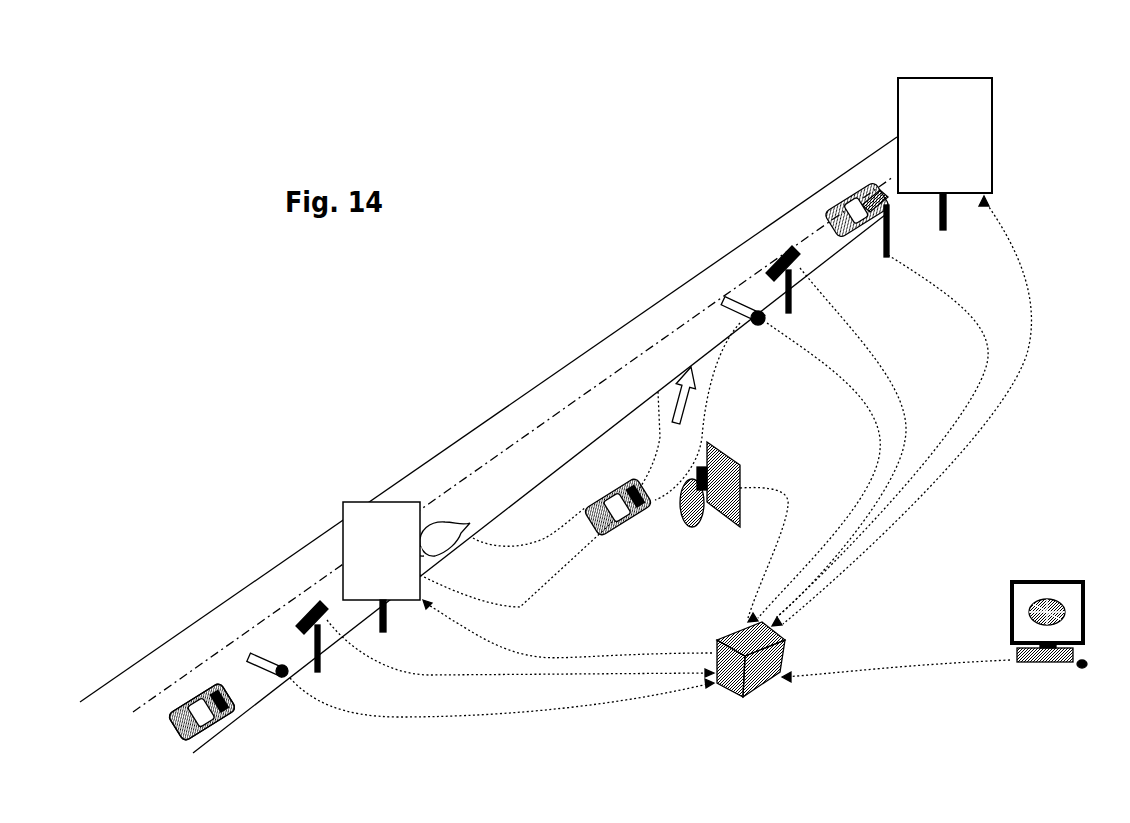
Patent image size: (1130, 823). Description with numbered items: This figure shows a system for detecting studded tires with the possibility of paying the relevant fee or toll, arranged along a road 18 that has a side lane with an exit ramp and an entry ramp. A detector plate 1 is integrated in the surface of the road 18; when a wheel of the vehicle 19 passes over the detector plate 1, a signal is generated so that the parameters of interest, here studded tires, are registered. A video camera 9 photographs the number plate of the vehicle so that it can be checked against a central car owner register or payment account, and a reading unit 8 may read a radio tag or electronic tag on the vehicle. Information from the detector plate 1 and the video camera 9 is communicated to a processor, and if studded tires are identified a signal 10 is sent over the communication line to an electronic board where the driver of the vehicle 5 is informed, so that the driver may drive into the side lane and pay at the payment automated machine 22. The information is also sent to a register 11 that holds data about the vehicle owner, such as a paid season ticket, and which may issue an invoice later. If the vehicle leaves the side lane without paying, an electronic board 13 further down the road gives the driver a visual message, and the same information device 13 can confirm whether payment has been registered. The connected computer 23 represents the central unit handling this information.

The detector plate 1 is at (252, 652).
The vehicle 5 is at (240, 703).
The reading unit 8 is at (848, 203).
The video camera 9 is at (781, 253).
The signal 10 is at (1017, 388).
The register 11 is at (728, 627).
The electronic board 13 is at (892, 107).
The road 18 is at (725, 298).
The vehicle 19 is at (170, 677).
The payment automated machine 22 is at (732, 450).
The remote computer 23 is at (1045, 577).